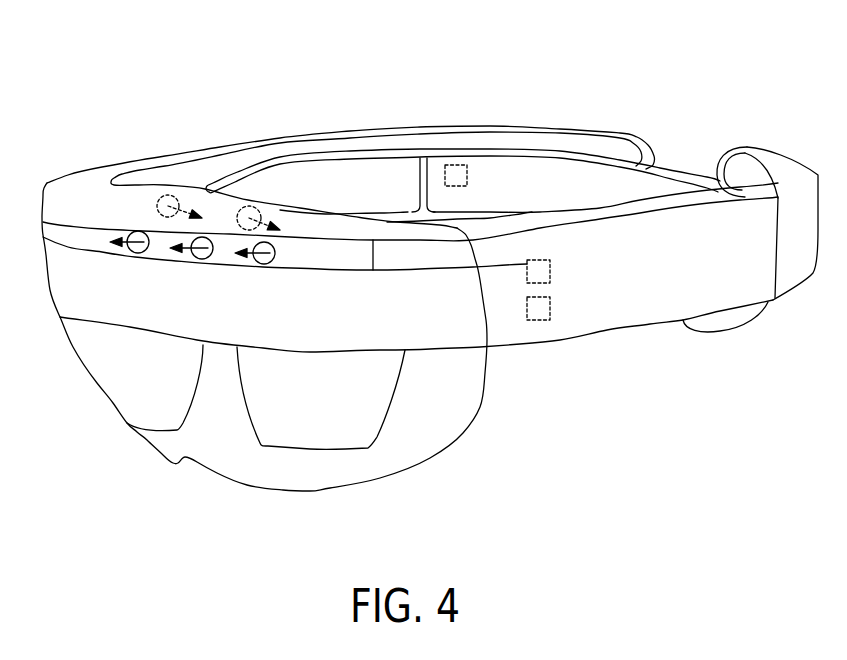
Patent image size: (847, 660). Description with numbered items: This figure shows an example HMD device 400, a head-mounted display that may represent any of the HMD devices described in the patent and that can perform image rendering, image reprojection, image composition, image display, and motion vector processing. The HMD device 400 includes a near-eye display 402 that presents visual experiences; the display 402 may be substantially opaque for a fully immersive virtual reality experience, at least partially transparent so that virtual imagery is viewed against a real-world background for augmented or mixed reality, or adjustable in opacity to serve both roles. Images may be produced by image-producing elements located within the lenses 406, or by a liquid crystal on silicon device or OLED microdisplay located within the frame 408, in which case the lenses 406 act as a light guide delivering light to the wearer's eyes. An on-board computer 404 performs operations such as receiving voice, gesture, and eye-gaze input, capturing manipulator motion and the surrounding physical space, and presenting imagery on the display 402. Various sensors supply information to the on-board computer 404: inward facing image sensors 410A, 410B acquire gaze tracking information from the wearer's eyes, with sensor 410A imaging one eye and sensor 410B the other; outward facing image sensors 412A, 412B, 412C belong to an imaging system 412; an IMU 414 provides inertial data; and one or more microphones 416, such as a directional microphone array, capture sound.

The HMD device 400 is at (573, 82).
The near-eye display 402 is at (75, 408).
The on-board computer 404 is at (545, 259).
The lenses 406 is at (249, 420).
The frame 408 is at (513, 348).
The inward facing image sensor 410A is at (258, 208).
The inward facing image sensor 410B is at (157, 206).
The imaging system 412 is at (193, 288).
The outward facing image sensor 412A is at (264, 264).
The outward facing image sensor 412B is at (202, 259).
The outward facing image sensor 412C is at (138, 253).
The IMU 414 is at (550, 300).
The microphone 416 is at (456, 164).